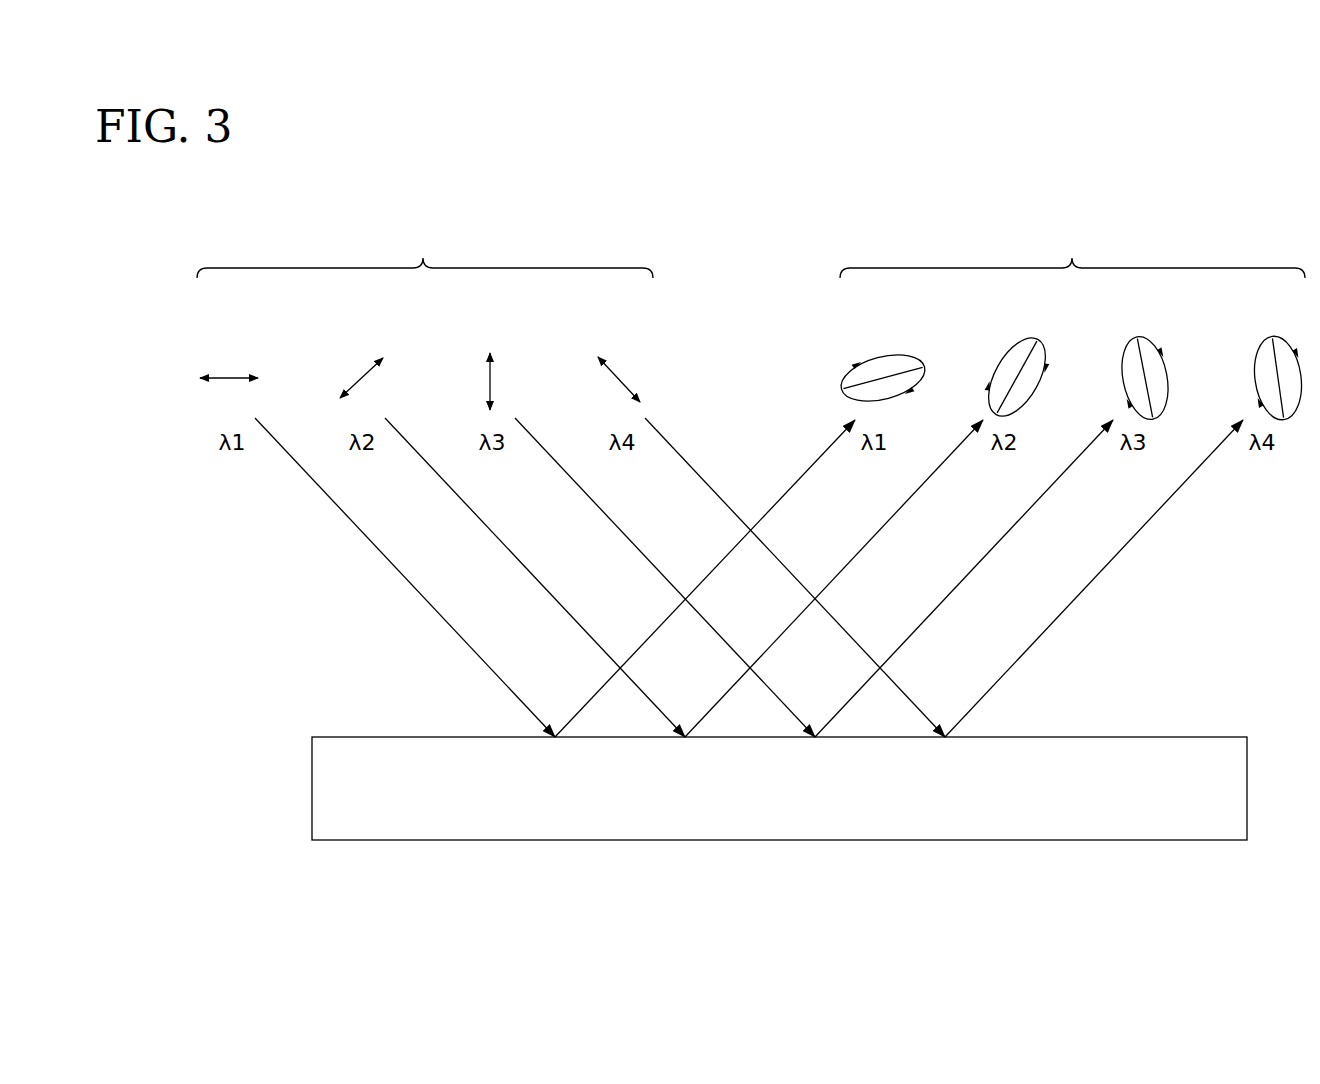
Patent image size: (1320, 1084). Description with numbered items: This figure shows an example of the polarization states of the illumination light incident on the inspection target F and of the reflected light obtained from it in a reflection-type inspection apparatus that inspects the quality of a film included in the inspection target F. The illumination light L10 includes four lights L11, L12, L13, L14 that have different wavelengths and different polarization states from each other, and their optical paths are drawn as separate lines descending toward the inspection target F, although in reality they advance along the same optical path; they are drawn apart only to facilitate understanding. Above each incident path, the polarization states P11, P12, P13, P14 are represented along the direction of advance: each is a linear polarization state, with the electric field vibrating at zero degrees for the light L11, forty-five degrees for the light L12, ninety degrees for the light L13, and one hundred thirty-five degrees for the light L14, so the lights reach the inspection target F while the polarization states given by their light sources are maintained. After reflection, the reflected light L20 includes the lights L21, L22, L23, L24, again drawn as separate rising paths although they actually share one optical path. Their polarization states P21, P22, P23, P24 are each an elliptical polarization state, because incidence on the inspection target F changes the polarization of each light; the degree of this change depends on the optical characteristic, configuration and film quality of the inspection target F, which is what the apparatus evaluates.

The illumination light L10 is at (425, 250).
The reflected light L20 is at (1072, 250).
The polarization state P11 is at (228, 377).
The polarization state P12 is at (360, 383).
The polarization state P13 is at (491, 381).
The polarization state P14 is at (619, 379).
The polarization state P21 is at (881, 358).
The polarization state P22 is at (995, 360).
The polarization state P23 is at (1124, 365).
The polarization state P24 is at (1255, 365).
The linear polarized light L11 is at (392, 564).
The linear polarized light L12 is at (522, 564).
The linear polarized light L13 is at (652, 564).
The linear polarized light L14 is at (782, 564).
The light L21 is at (724, 560).
The light L22 is at (854, 560).
The light L23 is at (984, 560).
The light L24 is at (1114, 560).
The inspection target F is at (1030, 842).